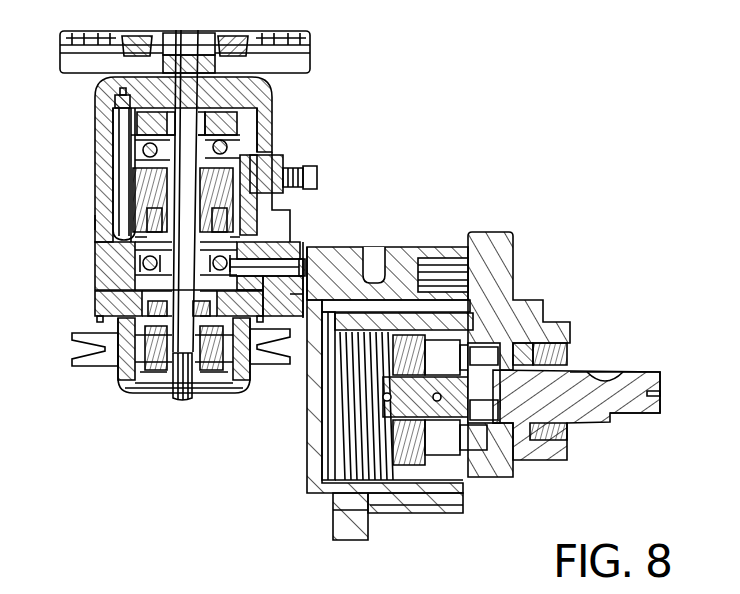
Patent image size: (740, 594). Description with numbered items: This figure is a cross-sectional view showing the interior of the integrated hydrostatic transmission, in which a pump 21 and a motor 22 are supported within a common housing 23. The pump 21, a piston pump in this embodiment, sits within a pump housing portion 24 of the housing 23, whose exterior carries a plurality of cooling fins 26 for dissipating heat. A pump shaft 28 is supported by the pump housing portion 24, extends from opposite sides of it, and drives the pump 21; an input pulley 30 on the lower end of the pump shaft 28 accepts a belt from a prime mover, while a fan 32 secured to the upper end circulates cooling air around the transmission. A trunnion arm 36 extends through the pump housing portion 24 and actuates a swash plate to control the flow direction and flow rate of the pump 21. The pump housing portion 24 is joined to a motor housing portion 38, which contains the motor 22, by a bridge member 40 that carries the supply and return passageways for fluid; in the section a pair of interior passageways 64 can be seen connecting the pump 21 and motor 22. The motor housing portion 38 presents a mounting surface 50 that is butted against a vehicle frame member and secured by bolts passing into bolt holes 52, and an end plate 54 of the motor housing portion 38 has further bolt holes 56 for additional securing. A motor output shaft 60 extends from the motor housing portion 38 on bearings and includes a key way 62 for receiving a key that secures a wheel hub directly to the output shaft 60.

The pump 21 is at (228, 172).
The motor 22 is at (470, 367).
The housing 23 is at (95, 220).
The pump housing portion 24 is at (105, 138).
The cooling fins 26 is at (97, 187).
The pump shaft 28 is at (97, 290).
The input pulley 30 is at (95, 368).
The fan 32 is at (312, 50).
The trunnion arm 36 is at (307, 168).
The motor housing portion 38 is at (484, 234).
The bridge member 40 is at (298, 318).
The mounting surface 50 is at (357, 247).
The bolt holes 52 is at (368, 250).
The end plate 54 is at (312, 432).
The bolt holes 56 is at (340, 517).
The motor output shaft 60 is at (623, 417).
The key way 62 is at (603, 373).
The interior passageways 64 is at (277, 262).